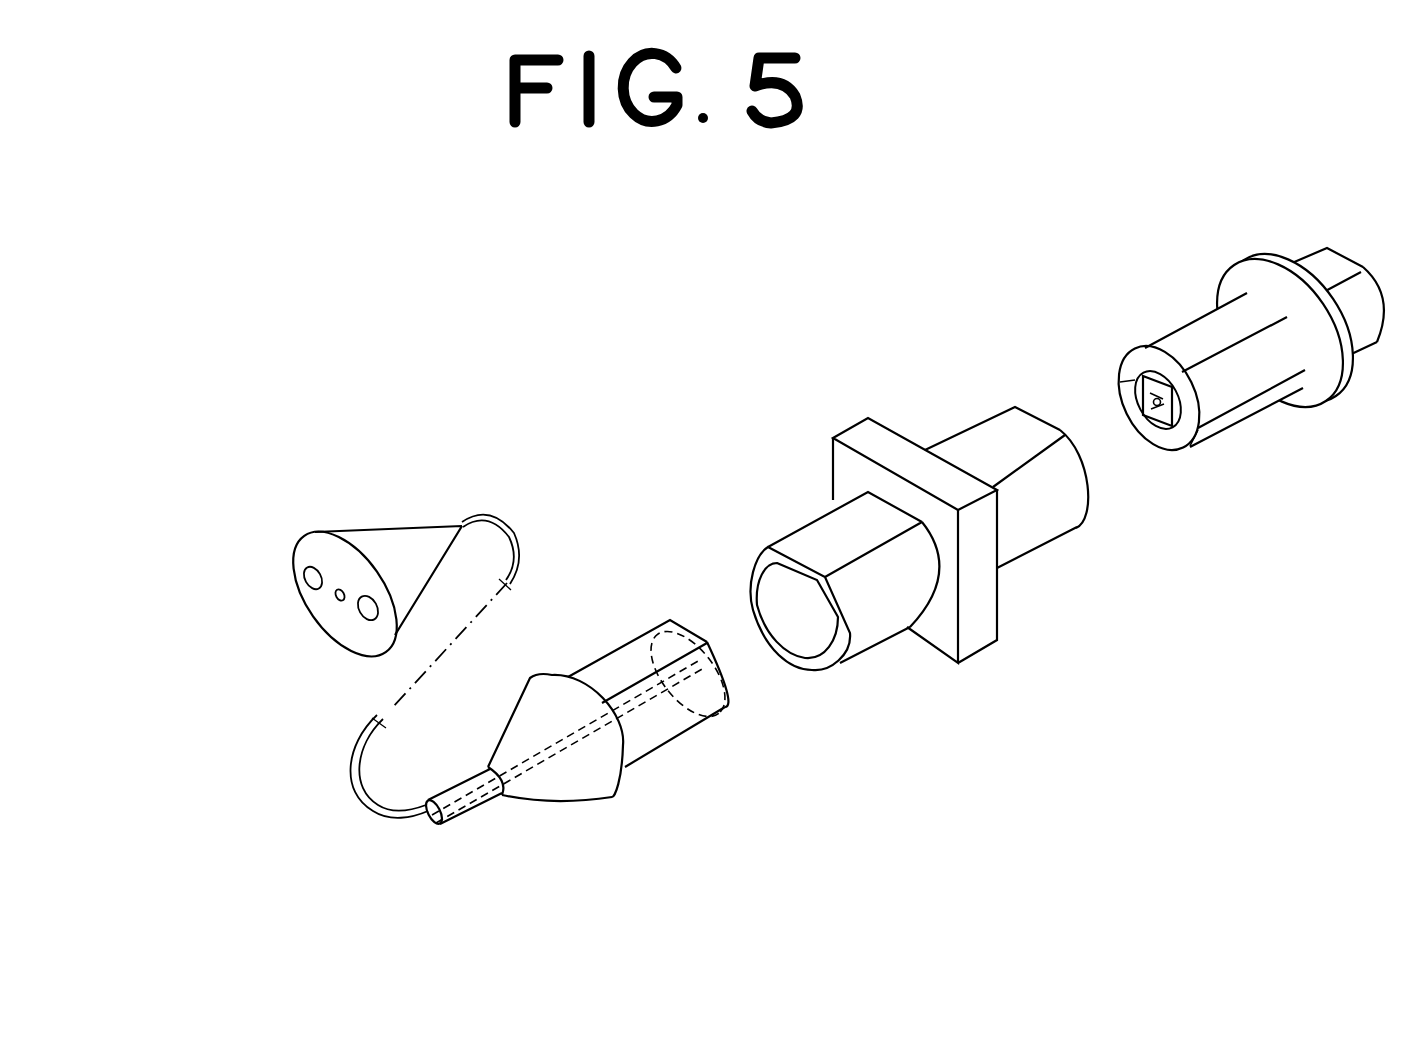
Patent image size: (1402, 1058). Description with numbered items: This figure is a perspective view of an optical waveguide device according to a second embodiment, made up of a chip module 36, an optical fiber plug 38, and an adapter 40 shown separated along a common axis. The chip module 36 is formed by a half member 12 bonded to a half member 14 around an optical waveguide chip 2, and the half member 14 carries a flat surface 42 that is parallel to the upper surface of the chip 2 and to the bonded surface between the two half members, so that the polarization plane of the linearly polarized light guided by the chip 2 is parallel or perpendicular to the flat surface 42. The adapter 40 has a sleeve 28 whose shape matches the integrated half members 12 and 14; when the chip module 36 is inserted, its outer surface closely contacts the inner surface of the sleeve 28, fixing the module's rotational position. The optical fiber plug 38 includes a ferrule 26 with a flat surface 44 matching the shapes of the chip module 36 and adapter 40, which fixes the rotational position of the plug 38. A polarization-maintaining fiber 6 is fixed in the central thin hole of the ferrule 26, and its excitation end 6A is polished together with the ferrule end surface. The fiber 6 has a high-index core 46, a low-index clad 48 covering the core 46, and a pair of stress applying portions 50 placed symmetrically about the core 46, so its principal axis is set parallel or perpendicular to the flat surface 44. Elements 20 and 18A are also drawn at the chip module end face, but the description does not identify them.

The chip module 36 is at (1233, 342).
The half member 12 is at (1238, 415).
The fiber receiving bore 20 is at (1150, 375).
The square hole 18A is at (1157, 428).
The optical waveguide chip 2 is at (1183, 440).
The flat surface 42 is at (1310, 252).
The half member 14 is at (1360, 328).
The adapter 40 is at (920, 512).
The sleeve 28 is at (870, 628).
The optical fiber plug 38 is at (632, 736).
The flat surface 44 is at (627, 655).
The ferrule 26 is at (662, 735).
The excitation end 6A is at (727, 707).
The polarization-maintaining fiber 6 is at (383, 815).
The clad 48 is at (331, 578).
The stress applying portions 50 is at (308, 577).
The core 46 is at (337, 600).